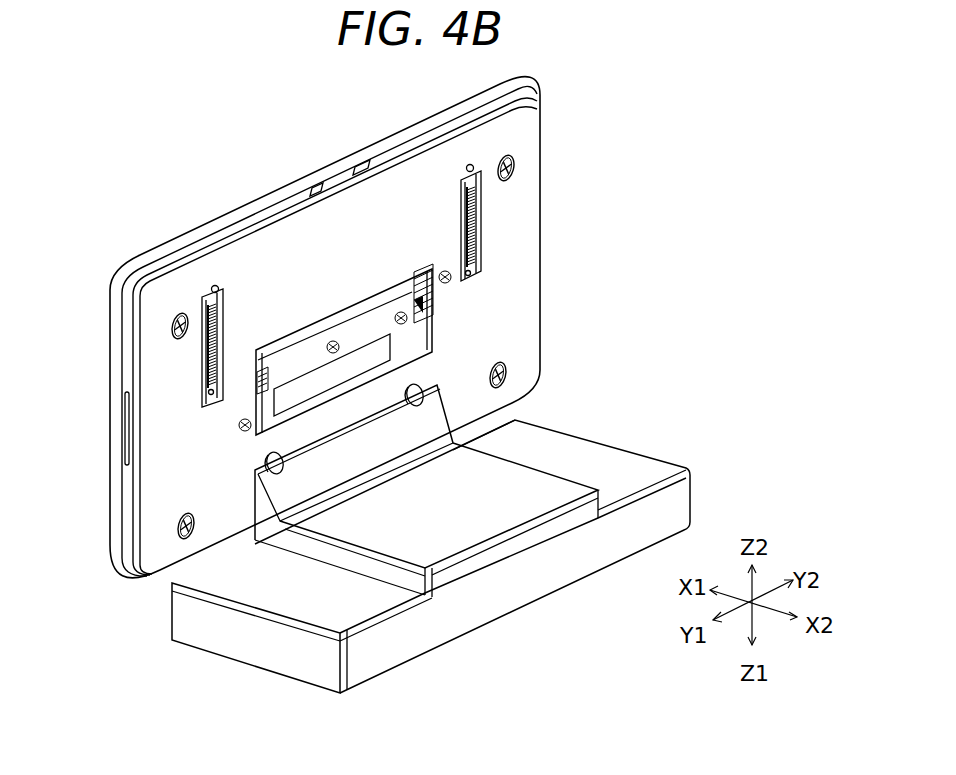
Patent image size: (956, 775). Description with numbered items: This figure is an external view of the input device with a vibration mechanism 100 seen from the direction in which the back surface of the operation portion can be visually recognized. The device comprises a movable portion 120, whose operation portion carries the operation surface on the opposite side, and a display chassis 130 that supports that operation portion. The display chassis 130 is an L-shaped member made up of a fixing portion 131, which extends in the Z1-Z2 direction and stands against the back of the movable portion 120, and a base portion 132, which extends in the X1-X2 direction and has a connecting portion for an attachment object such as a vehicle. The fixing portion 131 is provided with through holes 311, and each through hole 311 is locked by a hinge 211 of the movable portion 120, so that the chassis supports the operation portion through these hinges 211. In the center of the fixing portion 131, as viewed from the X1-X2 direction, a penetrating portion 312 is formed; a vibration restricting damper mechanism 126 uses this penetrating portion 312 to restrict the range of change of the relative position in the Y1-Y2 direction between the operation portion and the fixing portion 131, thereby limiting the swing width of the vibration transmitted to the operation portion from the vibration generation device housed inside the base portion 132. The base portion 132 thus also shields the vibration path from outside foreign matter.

The input device with a vibration mechanism 100 is at (154, 158).
The movable portion 120 is at (150, 260).
The vibration restricting damper mechanism 126 is at (277, 372).
The display chassis 130 is at (722, 296).
The fixing portion 131 is at (513, 333).
The base portion 132 is at (593, 458).
The hinge 211 is at (340, 359).
The through hole 311 is at (174, 314).
The penetrating portion 312 is at (323, 377).